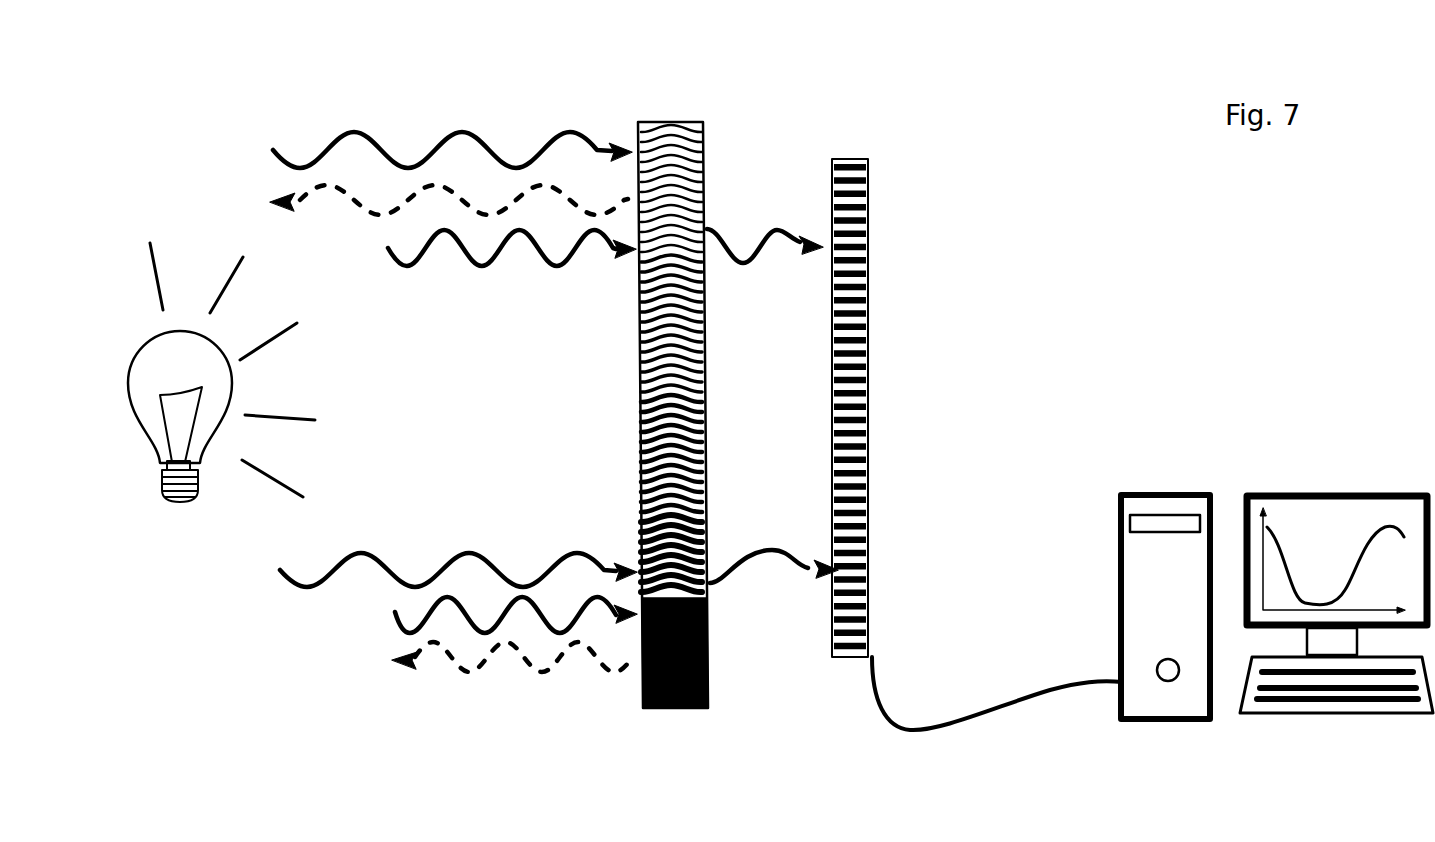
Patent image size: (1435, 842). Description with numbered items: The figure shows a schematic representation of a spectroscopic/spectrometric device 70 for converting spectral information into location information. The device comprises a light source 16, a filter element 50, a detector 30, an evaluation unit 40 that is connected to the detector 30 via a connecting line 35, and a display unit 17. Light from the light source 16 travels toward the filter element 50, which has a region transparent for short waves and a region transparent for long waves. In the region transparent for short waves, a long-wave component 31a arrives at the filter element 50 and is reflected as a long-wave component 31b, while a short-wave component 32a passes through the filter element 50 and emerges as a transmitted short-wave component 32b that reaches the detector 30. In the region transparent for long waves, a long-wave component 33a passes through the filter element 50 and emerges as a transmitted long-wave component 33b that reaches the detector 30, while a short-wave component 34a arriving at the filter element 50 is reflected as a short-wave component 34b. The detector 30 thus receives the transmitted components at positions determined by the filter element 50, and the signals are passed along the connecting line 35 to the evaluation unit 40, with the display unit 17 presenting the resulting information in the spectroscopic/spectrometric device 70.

The light source 16 is at (172, 506).
The display unit 17 is at (1268, 492).
The detector 30 is at (868, 313).
The long-wave component prior to incidence 31a is at (327, 148).
The long-wave component after incidence 31b is at (268, 204).
The short-wave component prior to passing through 32a is at (488, 265).
The short-wave component after passing through 32b is at (783, 229).
The long-wave component prior to passing through 33a is at (393, 570).
The long-wave component after passing through 33b is at (807, 580).
The short-wave component prior to incidence 34a is at (397, 617).
The short-wave component after incidence 34b is at (470, 672).
The connecting line 35 is at (982, 717).
The evaluation unit 40 is at (1277, 541).
The filter element 50 is at (650, 122).
The spectroscopic/spectrometric device 70 is at (970, 117).